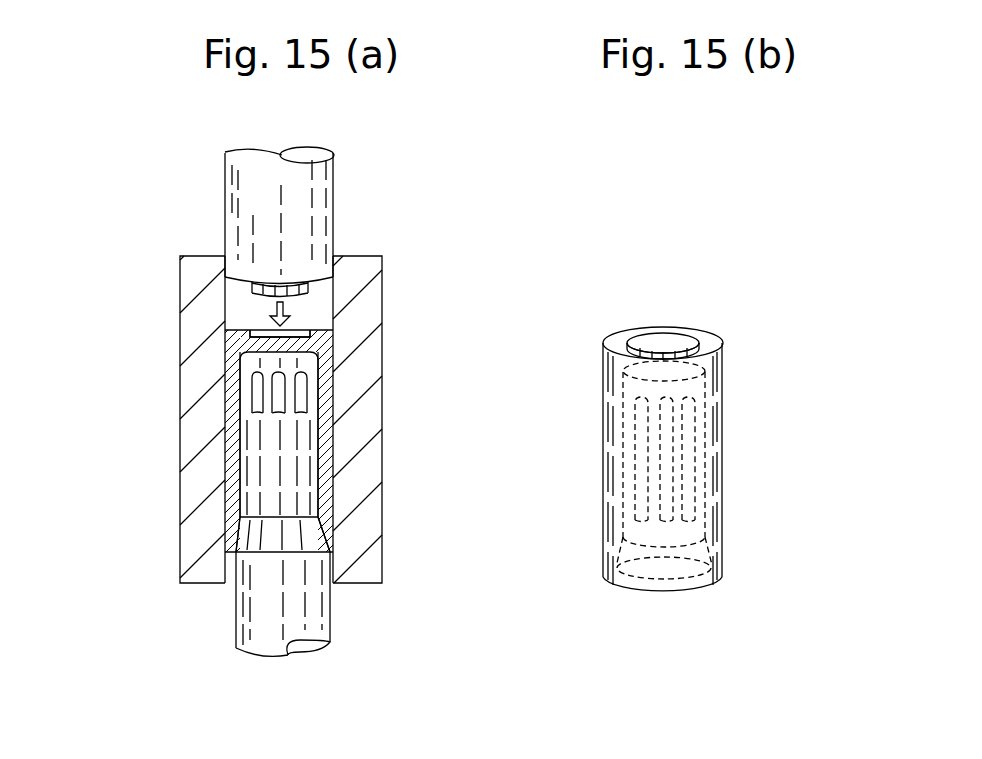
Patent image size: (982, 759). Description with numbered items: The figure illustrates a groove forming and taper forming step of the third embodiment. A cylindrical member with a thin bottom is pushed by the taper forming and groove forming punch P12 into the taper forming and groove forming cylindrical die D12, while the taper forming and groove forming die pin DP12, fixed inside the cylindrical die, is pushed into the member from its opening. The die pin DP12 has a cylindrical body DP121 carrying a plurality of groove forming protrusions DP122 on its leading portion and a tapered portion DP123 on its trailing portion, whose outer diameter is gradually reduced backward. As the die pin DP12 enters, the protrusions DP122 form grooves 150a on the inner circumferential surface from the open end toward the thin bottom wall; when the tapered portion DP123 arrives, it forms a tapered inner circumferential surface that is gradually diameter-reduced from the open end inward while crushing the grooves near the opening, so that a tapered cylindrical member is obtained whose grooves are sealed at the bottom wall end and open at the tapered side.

The taper forming and groove forming punch P12 is at (345, 197).
The taper forming and groove forming cylindrical die D12 is at (388, 457).
The grooves 150a is at (695, 452).
The taper forming and groove forming die pin DP12 is at (342, 610).
The cylindrical body DP121 is at (294, 452).
The groove forming protrusions DP122 is at (305, 392).
The tapered portion DP123 is at (312, 540).